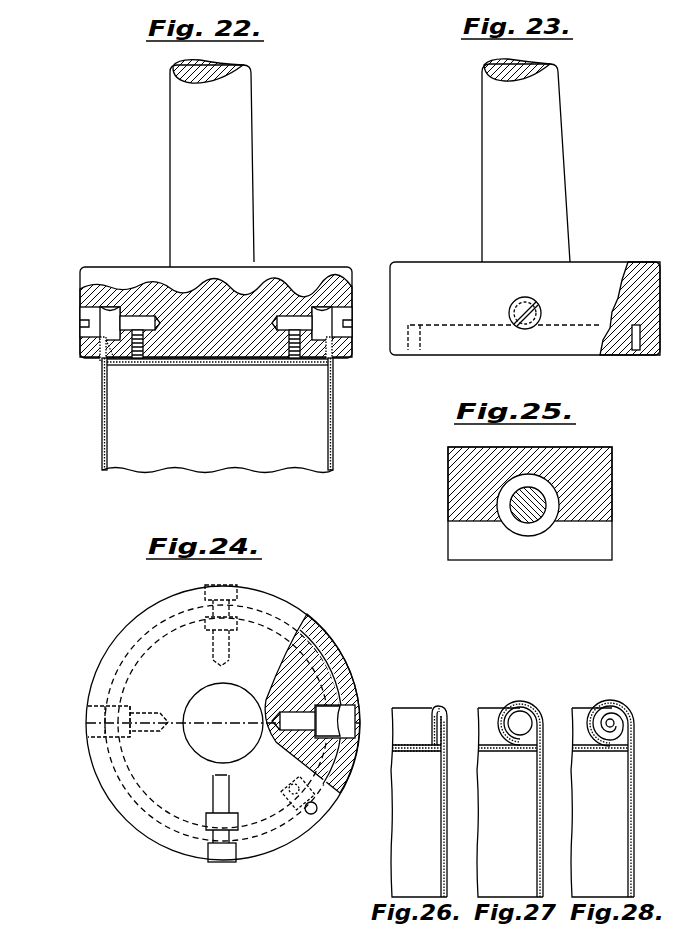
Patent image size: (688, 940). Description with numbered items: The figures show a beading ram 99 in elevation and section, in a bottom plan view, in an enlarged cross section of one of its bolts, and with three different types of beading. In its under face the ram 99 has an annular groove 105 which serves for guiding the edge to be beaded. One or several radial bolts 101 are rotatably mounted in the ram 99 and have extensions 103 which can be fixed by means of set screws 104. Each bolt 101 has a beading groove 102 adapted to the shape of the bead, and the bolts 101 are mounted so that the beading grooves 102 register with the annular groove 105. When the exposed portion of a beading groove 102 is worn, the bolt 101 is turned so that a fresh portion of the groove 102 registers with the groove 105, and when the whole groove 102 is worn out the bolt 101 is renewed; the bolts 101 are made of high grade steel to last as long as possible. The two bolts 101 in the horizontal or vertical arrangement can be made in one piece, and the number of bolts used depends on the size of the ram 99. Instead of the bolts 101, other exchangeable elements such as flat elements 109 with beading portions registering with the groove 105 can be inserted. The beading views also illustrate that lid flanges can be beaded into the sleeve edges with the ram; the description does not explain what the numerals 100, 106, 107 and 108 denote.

In FIG. 22, the ram 99 is at (300, 265).
In FIG. 23, the ram 99 is at (594, 268).
In FIG. 25, the ram 99 is at (603, 462).
In FIG. 24, the ram 99 is at (155, 828).
In FIG. 22, the screw 100 is at (104, 300).
In FIG. 24, the screw 100 is at (210, 592).
In FIG. 22, the radial bolt 101 is at (86, 319).
In FIG. 23, the radial bolt 101 is at (530, 320).
In FIG. 25, the radial bolt 101 is at (535, 520).
In FIG. 24, the radial bolt 101 is at (236, 588).
In FIG. 22, the beading groove 102 is at (103, 323).
In FIG. 25, the beading groove 102 is at (507, 500).
In FIG. 24, the beading groove 102 is at (352, 705).
In FIG. 22, the extension 103 is at (152, 326).
In FIG. 24, the extension 103 is at (298, 722).
In FIG. 22, the set screw 104 is at (140, 345).
In FIG. 22, the annular groove 105 is at (100, 348).
In FIG. 23, the annular groove 105 is at (637, 342).
In FIG. 25, the annular groove 105 is at (610, 537).
In FIG. 24, the annular groove 105 is at (318, 645).
In FIG. 22, the cup / shell wall 106 is at (102, 412).
In FIG. 26, the cup / shell wall 106 is at (448, 848).
In FIG. 27, the cup / shell wall 106 is at (544, 848).
In FIG. 28, the cup / shell wall 106 is at (635, 848).
In FIG. 22, the hooked rim 107 is at (110, 346).
In FIG. 26, the hooked rim 107 is at (434, 725).
In FIG. 22, the plate / flange 108 is at (275, 364).
In FIG. 26, the plate / flange 108 is at (412, 750).
In FIG. 27, the plate / flange 108 is at (500, 750).
In FIG. 28, the plate / flange 108 is at (596, 750).
In FIG. 24, the flat element 109 is at (302, 818).
In FIG. 27, the flat element 109 is at (512, 718).